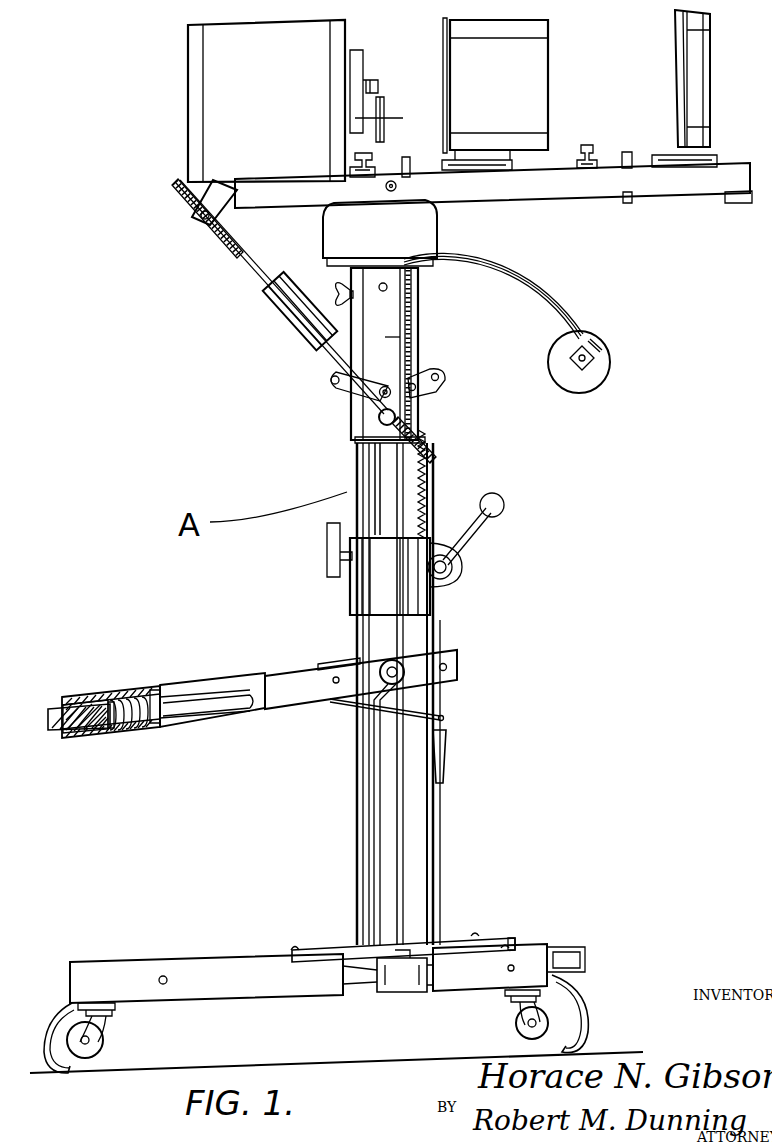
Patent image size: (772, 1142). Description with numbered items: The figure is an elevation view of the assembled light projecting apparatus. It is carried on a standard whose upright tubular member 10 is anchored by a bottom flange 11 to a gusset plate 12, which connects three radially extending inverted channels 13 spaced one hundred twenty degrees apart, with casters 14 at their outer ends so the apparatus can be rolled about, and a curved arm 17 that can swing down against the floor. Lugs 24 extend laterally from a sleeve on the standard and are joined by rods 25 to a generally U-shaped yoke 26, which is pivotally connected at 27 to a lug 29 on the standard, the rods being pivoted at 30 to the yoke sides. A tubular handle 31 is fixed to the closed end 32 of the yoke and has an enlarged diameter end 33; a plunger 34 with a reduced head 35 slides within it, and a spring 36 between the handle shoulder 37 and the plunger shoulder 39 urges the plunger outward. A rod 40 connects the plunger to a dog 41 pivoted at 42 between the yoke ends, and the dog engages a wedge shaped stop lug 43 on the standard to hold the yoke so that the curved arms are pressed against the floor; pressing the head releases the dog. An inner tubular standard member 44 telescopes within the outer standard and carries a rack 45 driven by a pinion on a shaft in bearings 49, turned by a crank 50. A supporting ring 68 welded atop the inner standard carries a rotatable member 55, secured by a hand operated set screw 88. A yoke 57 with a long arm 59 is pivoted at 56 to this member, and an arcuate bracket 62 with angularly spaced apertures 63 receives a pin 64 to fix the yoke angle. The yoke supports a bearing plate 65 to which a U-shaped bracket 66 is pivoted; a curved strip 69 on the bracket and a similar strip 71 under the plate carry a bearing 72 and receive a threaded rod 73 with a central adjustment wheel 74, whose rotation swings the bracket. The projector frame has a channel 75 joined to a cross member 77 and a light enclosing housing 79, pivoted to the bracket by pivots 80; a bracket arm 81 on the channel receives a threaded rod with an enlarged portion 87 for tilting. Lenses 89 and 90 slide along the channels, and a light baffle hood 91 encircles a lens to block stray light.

The upright tubular member 10 is at (356, 808).
The bottom flange 11 is at (450, 930).
The gusset plate 12 is at (513, 934).
The radially extending inverted channels 13 is at (215, 953).
The casters 14 is at (105, 1052).
The curved arm 17 is at (600, 1034).
The lugs 24 is at (403, 958).
The rods 25 is at (402, 860).
The U-shaped yoke 26 is at (440, 650).
The pivot 27 is at (336, 684).
The lug 29 is at (338, 660).
The pivotal connection 30 is at (404, 673).
The handle 31 is at (186, 688).
The closed end 32 is at (280, 700).
The enlarged diameter end 33 is at (100, 693).
The plunger 34 is at (92, 703).
The reduced head 35 is at (48, 723).
The spring 36 is at (150, 722).
The shoulder 37 is at (160, 694).
The shoulder 39 is at (112, 725).
The rod 40 is at (202, 710).
The dog 41 is at (448, 712).
The pivotal connection 42 is at (447, 665).
The wedge shaped stop lug 43 is at (446, 760).
The inner tubular standard member 44 is at (372, 460).
The rack 45 is at (423, 490).
The bearings 49 is at (450, 583).
The crank 50 is at (505, 503).
The rotatable member 55 is at (420, 350).
The pivot 56 is at (388, 289).
The yoke 57 is at (400, 337).
The long arm 59 is at (384, 357).
The arcuate bracket 62 is at (335, 389).
The apertures 63 is at (425, 395).
The pin 64 is at (378, 417).
The plate 65 is at (342, 266).
The U-shaped bracket 66 is at (332, 235).
The supporting ring 68 is at (425, 440).
The curved strip 69 is at (523, 266).
The curved strip 71 is at (538, 306).
The bearing 72 is at (590, 372).
The threaded rod 73 is at (572, 365).
The adjustment wheel 74 is at (604, 380).
The channel 75 is at (698, 180).
The cross member 77 is at (739, 205).
The light enclosing housing 79 is at (215, 110).
The pivots 80 is at (391, 192).
The bracket arm 81 is at (200, 222).
The central enlarged portion 87 is at (295, 313).
The hand operated set screw 88 is at (347, 313).
The lens 89 is at (515, 93).
The lens 90 is at (690, 80).
The light baffle hood 91 is at (548, 23).